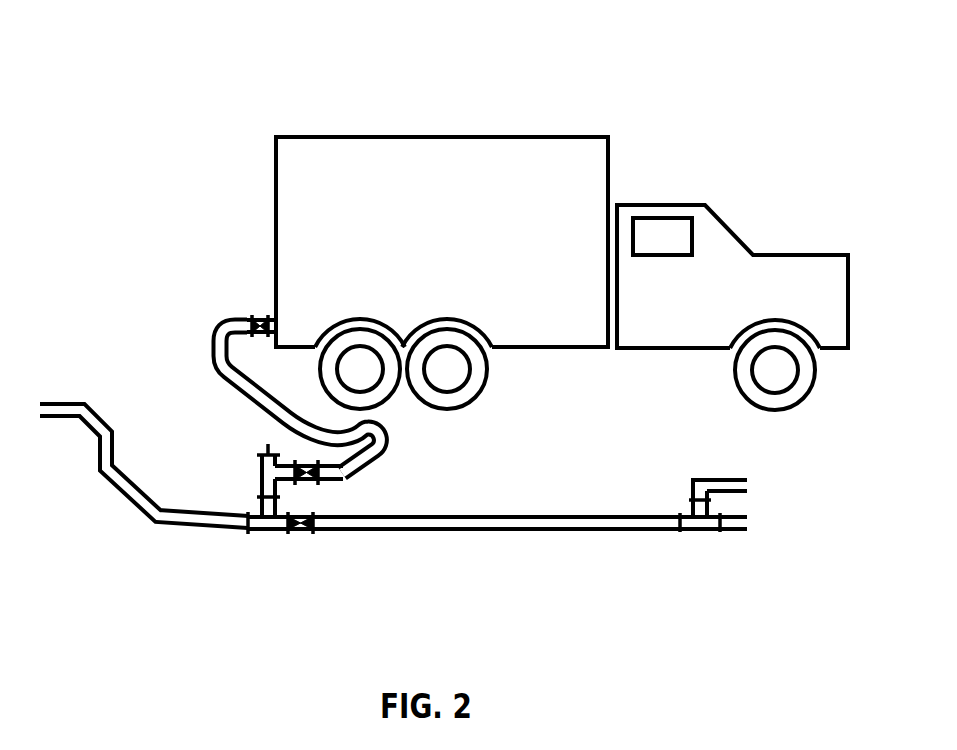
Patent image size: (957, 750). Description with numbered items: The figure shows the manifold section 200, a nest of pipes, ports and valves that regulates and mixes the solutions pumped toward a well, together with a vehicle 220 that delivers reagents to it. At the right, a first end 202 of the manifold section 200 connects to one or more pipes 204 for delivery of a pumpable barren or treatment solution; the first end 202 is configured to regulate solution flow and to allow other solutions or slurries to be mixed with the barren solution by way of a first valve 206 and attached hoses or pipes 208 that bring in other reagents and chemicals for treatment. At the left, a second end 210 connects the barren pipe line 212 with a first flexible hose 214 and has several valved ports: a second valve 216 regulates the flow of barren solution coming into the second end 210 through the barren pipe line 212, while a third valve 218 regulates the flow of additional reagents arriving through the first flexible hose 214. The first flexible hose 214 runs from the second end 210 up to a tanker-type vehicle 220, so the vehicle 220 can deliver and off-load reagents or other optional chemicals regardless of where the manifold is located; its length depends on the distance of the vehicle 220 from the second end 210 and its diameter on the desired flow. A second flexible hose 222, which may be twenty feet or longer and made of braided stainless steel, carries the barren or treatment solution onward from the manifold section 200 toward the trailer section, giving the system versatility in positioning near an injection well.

The manifold section 200 is at (477, 29).
The first end 202 is at (696, 533).
The pipes 204 is at (740, 531).
The first valve 206 is at (720, 481).
The hoses or pipes 208 is at (743, 482).
The second end 210 is at (272, 532).
The barren pipe line 212 is at (534, 529).
The first flexible hose 214 is at (233, 373).
The second valve 216 is at (308, 495).
The third valve 218 is at (307, 466).
The vehicle 220 is at (276, 180).
The second flexible hose 222 is at (188, 524).